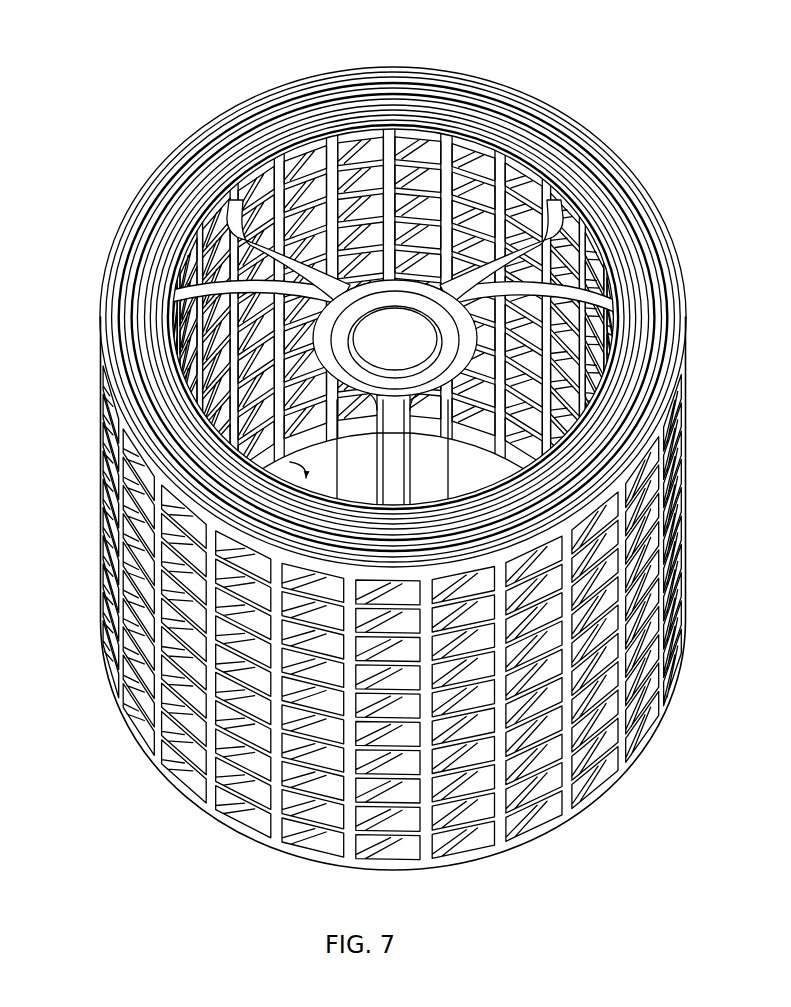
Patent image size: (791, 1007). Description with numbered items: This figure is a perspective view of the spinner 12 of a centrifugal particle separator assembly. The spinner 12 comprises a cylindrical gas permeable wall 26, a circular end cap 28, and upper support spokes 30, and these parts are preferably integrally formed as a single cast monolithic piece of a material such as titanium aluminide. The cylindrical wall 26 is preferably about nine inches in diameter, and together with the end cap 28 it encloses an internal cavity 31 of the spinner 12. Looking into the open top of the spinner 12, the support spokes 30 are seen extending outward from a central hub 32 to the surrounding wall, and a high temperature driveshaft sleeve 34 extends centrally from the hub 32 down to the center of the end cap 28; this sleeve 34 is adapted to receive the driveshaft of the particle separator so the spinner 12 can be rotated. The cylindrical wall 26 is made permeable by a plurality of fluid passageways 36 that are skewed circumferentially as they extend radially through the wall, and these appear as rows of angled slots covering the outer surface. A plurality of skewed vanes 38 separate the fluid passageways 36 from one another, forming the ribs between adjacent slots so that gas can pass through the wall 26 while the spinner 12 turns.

The spinner 12 is at (180, 68).
The cylindrical gas permeable wall 26 is at (640, 527).
The circular end cap 28 is at (300, 432).
The upper support spokes 30 is at (550, 268).
The internal cavity 31 is at (290, 465).
The central hub 32 is at (457, 342).
The high temperature driveshaft sleeve 34 is at (427, 461).
The fluid passageways 36 is at (400, 857).
The skewed vanes 38 is at (227, 803).